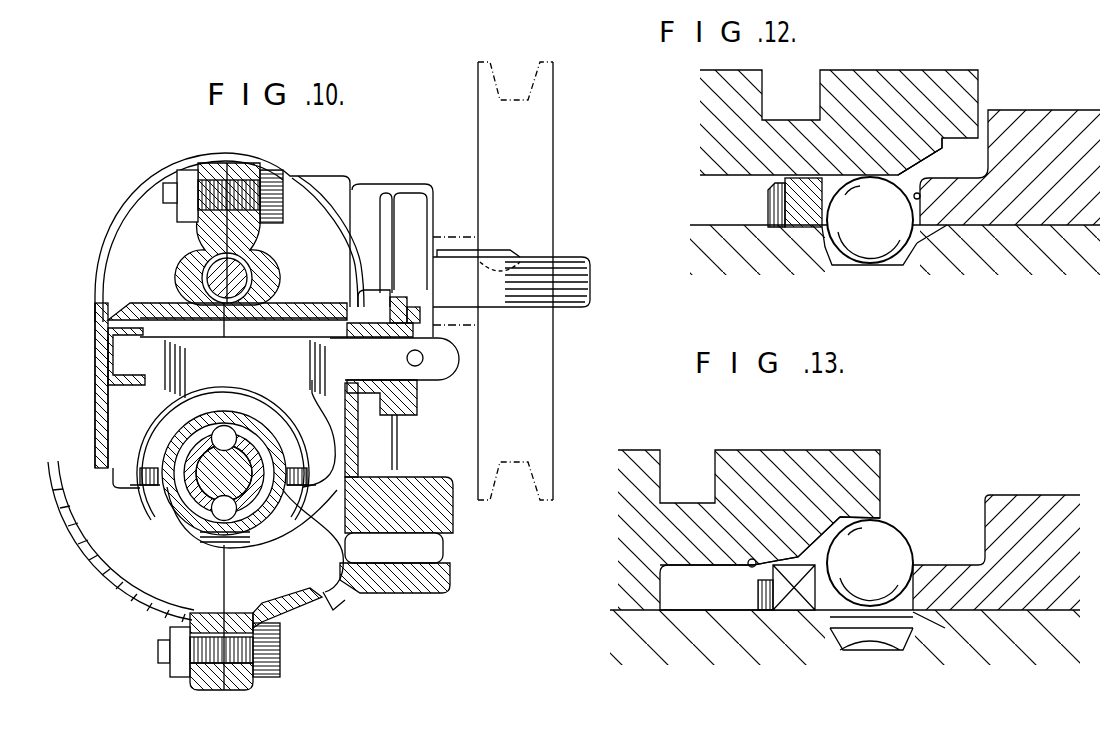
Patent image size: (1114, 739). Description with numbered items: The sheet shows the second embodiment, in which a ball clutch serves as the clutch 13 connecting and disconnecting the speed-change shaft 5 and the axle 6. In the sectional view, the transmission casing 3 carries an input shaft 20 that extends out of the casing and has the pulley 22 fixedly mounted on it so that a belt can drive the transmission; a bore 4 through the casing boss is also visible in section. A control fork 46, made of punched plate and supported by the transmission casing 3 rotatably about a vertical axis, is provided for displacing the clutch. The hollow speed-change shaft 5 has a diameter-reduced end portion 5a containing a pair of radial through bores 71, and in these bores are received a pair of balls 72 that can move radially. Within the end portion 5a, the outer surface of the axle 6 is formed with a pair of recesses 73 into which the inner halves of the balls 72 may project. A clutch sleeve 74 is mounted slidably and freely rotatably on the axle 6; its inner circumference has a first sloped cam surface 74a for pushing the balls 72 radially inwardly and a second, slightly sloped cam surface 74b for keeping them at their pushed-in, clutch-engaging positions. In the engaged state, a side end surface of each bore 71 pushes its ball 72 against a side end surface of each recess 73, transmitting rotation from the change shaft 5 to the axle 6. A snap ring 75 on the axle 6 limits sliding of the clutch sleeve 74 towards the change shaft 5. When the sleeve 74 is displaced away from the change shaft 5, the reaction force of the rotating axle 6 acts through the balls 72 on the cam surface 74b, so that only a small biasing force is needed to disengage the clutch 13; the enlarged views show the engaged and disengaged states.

In FIG. 10, the transmission casing 3 is at (100, 412).
In FIG. 10, the pivot bolt hole 4 is at (240, 278).
In FIG. 10, the speed-change shaft 5 is at (273, 543).
In FIG. 12, the speed-change shaft 5 is at (1045, 128).
In FIG. 13, the speed-change shaft 5 is at (1030, 512).
In FIG. 12, the diameter-reduced end portion 5a is at (807, 207).
In FIG. 13, the diameter-reduced end portion 5a is at (790, 615).
In FIG. 10, the axle 6 is at (200, 497).
In FIG. 12, the axle 6 is at (1008, 242).
In FIG. 13, the axle 6 is at (1030, 625).
In FIG. 10, the clutch 13 is at (123, 522).
In FIG. 10, the input shaft 20 is at (457, 287).
In FIG. 10, the pulley 22 is at (555, 140).
In FIG. 10, the control fork 46 is at (147, 407).
In FIG. 12, the radial through bores 71 is at (952, 228).
In FIG. 13, the radial through bores 71 is at (913, 620).
In FIG. 10, the balls 72 is at (230, 437).
In FIG. 12, the balls 72 is at (858, 222).
In FIG. 13, the balls 72 is at (875, 545).
In FIG. 12, the recesses 73 is at (903, 268).
In FIG. 13, the recesses 73 is at (850, 650).
In FIG. 10, the clutch sleeve 74 is at (270, 490).
In FIG. 12, the clutch sleeve 74 is at (870, 97).
In FIG. 13, the clutch sleeve 74 is at (770, 470).
In FIG. 12, the first sloped cam surface 74a is at (938, 147).
In FIG. 13, the first sloped cam surface 74a is at (843, 533).
In FIG. 12, the second sloped cam surface 74b is at (905, 172).
In FIG. 13, the second sloped cam surface 74b is at (740, 563).
In FIG. 12, the snap ring 75 is at (775, 228).
In FIG. 13, the snap ring 75 is at (758, 593).